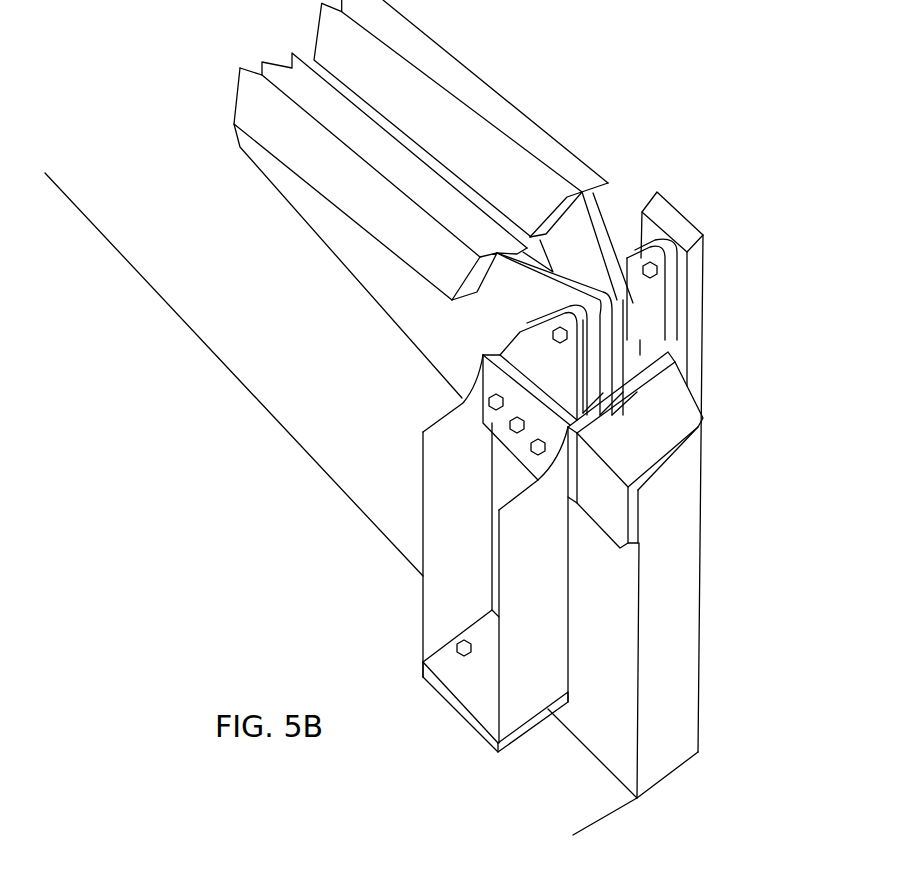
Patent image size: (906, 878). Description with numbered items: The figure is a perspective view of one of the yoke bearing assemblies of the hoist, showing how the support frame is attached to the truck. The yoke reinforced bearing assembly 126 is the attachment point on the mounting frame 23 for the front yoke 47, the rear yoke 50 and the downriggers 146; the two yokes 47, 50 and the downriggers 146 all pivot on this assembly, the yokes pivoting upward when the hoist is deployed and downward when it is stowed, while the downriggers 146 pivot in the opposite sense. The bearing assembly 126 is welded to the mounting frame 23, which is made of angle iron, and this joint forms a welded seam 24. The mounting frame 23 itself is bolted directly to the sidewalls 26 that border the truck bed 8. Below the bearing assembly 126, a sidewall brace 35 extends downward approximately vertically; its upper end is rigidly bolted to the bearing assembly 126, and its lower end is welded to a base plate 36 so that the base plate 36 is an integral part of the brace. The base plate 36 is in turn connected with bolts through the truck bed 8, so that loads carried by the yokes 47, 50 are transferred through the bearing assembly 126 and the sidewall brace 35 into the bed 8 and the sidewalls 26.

The rear yoke 50 is at (413, 50).
The front yoke 47 is at (253, 132).
The downriggers 146 is at (688, 277).
The welded seam 24 is at (650, 380).
The mounting frame 23 is at (668, 405).
The yoke reinforced bearing assembly 126 is at (530, 350).
The sidewall brace 35 is at (443, 588).
The base plate 36 is at (472, 697).
The sidewalls 26 is at (297, 342).
The bed 8 is at (244, 604).